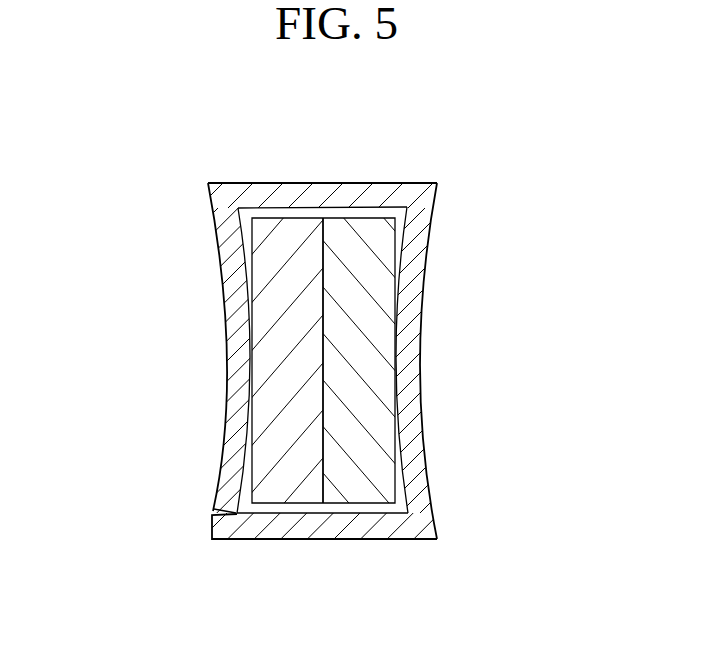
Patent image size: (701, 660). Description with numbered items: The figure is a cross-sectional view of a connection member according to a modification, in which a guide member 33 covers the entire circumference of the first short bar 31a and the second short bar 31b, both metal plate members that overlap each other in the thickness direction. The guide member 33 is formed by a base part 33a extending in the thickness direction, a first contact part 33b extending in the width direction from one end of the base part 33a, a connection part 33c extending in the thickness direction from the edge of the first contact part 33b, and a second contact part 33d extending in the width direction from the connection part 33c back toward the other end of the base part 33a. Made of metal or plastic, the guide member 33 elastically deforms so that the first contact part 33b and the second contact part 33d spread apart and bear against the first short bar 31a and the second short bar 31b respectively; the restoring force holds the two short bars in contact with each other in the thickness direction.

The guide member 33 is at (350, 360).
The base part 33a is at (332, 530).
The first contact part 33b is at (412, 362).
The connection part 33c is at (320, 190).
The second contact part 33d is at (235, 362).
The first short bar 31a is at (248, 238).
The second short bar 31b is at (397, 238).